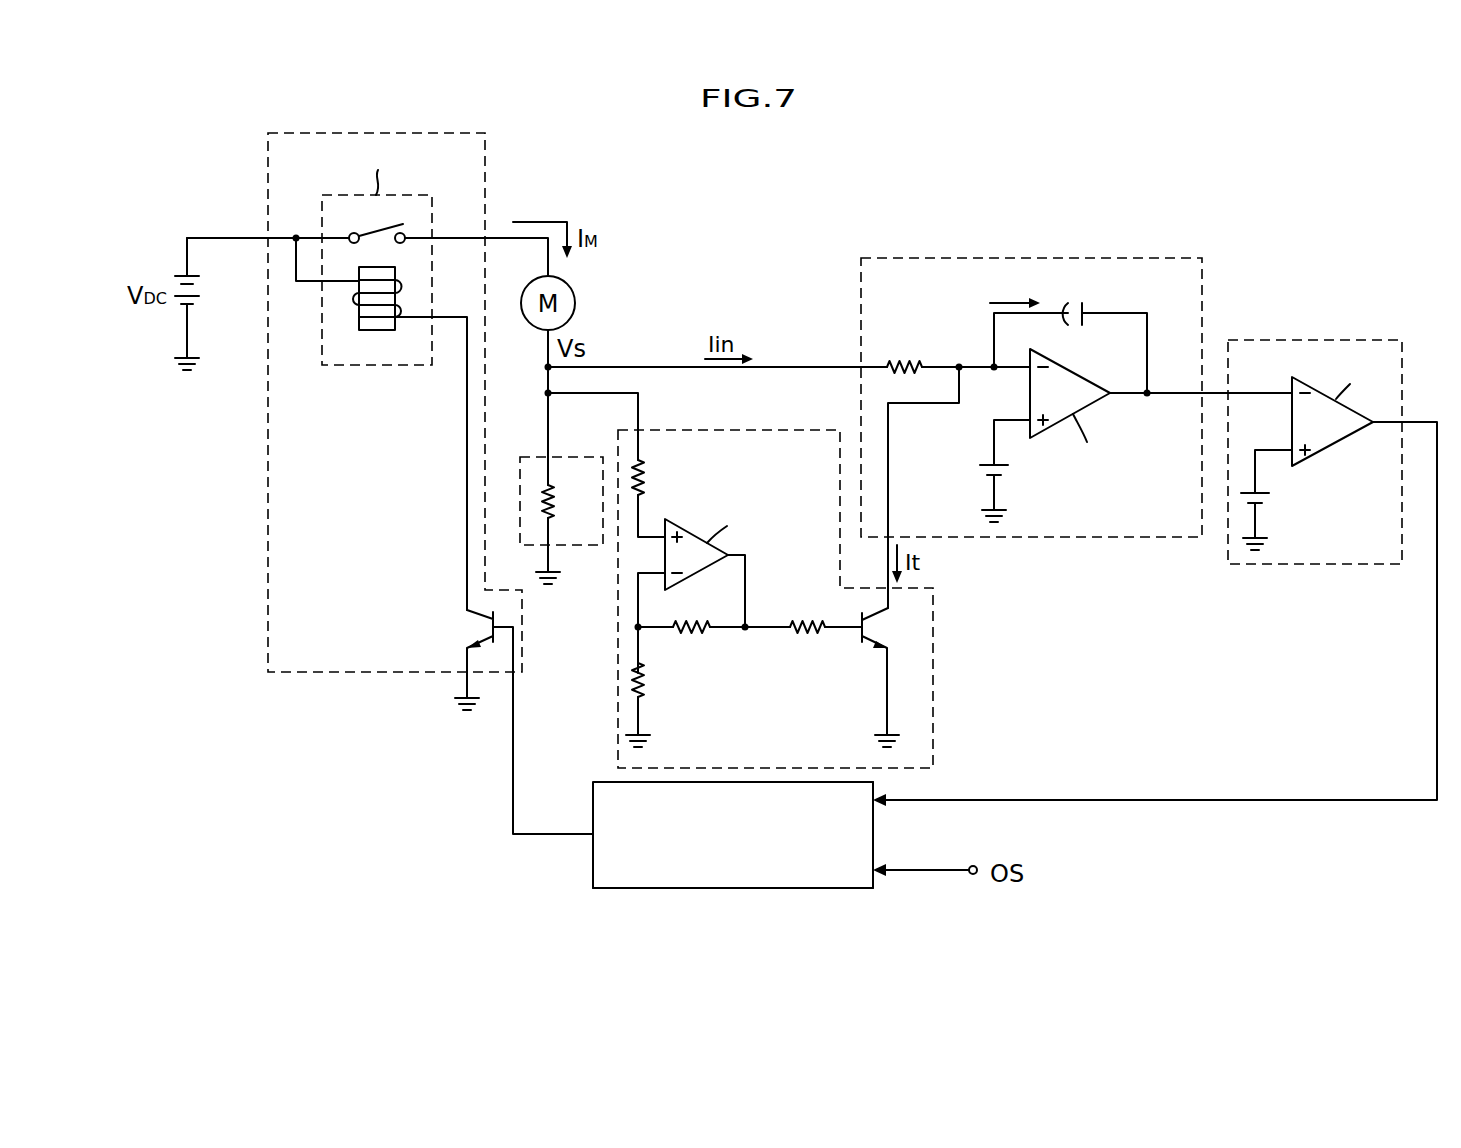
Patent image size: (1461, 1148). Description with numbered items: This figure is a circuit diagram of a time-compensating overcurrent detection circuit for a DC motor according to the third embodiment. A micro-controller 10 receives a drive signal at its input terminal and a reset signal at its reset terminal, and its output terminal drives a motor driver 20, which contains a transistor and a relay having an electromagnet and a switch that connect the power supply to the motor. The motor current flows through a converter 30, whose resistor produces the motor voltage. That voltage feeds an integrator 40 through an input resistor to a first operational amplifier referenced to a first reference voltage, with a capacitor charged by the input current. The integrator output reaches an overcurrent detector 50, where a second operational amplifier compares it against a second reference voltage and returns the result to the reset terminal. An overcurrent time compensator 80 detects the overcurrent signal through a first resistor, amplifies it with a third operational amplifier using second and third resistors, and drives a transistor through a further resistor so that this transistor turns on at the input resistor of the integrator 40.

The micro-controller 10 is at (728, 893).
The motor driver 20 is at (268, 178).
The converter 30 is at (574, 456).
The integrator 40 is at (1049, 258).
The overcurrent detector 50 is at (1311, 340).
The overcurrent time compensator 80 is at (738, 429).